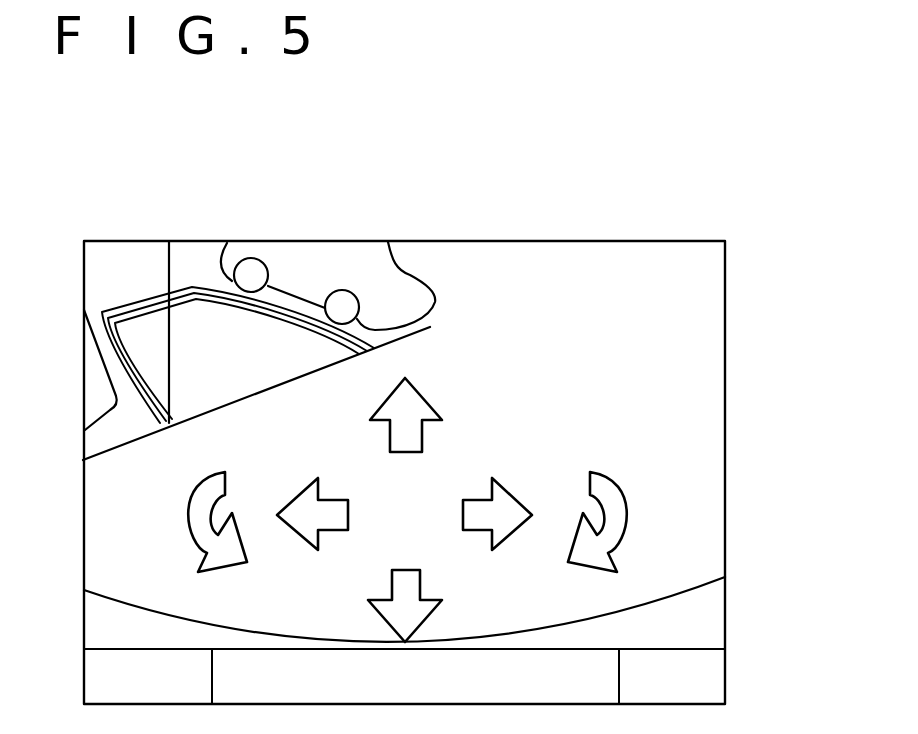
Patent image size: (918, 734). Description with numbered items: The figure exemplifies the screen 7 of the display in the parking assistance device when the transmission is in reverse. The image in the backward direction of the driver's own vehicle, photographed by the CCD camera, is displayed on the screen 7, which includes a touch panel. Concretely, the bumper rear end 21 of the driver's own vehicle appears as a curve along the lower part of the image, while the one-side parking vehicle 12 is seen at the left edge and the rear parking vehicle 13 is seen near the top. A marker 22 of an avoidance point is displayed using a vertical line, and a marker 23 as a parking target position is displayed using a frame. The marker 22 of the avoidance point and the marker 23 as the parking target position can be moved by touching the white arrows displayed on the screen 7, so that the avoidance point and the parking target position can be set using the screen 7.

The screen 7 is at (650, 210).
The one-side parking vehicle 12 is at (95, 375).
The rear parking vehicle 13 is at (340, 267).
The bumper rear end 21 is at (693, 592).
The marker of avoidance point 22 is at (169, 265).
The marker as parking target position 23 is at (283, 320).